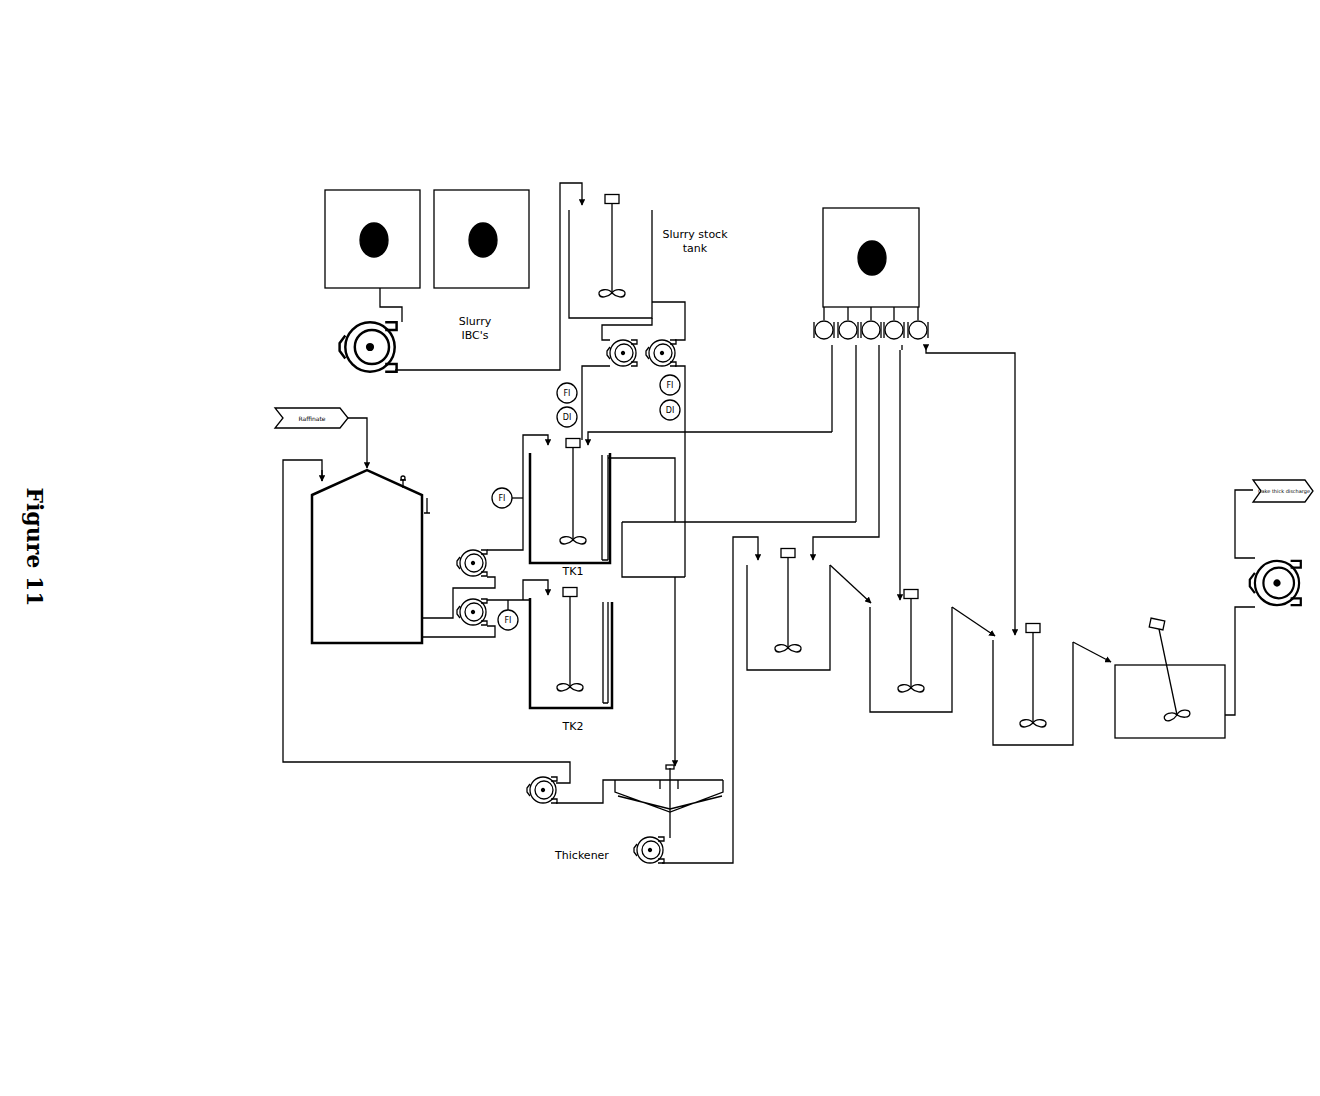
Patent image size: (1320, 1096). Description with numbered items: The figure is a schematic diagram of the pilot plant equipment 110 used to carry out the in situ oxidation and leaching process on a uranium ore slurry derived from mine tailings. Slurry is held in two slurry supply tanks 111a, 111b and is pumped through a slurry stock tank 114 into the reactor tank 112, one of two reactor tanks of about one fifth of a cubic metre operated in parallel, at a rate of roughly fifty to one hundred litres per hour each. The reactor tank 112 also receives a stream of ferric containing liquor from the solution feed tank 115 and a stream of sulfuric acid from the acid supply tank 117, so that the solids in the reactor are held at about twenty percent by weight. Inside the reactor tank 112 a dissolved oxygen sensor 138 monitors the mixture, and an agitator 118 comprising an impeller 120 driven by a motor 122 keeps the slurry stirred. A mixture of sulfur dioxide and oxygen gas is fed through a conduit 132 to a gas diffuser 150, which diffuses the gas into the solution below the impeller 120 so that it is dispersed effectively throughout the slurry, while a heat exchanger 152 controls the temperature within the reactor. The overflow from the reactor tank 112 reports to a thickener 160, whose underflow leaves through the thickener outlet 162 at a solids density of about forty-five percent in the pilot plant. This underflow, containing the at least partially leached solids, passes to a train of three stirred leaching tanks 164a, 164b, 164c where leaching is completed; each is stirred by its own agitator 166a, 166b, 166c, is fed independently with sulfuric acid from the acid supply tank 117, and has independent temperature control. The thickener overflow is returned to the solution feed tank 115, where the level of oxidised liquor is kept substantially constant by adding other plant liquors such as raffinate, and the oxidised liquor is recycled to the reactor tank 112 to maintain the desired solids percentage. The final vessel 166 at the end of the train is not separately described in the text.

The pilot plant equipment 110 is at (253, 318).
The slurry supply tank 111a is at (341, 187).
The slurry supply tank 111b is at (463, 187).
The slurry stock tank 114 is at (650, 210).
The solution feed tank 115 is at (290, 540).
The acid supply tank 117 is at (903, 243).
The dissolved oxygen sensor 138 is at (557, 416).
The reactor tank 112 is at (528, 467).
The conduit 132 is at (528, 487).
The motor 122 is at (576, 440).
The agitator 118 is at (567, 510).
The impeller 120 is at (590, 533).
The heat exchanger 152 is at (613, 455).
The gas diffuser 150 is at (618, 560).
The thickener 160 is at (723, 795).
The thickener outlet 162 is at (678, 812).
The leaching tank 164a is at (763, 660).
The leaching tank 164b is at (932, 705).
The leaching tank 164c is at (1057, 737).
The agitator 166a is at (788, 597).
The agitator 166b is at (913, 622).
The agitator 166c is at (1037, 648).
The discharge tank 166 is at (1203, 732).